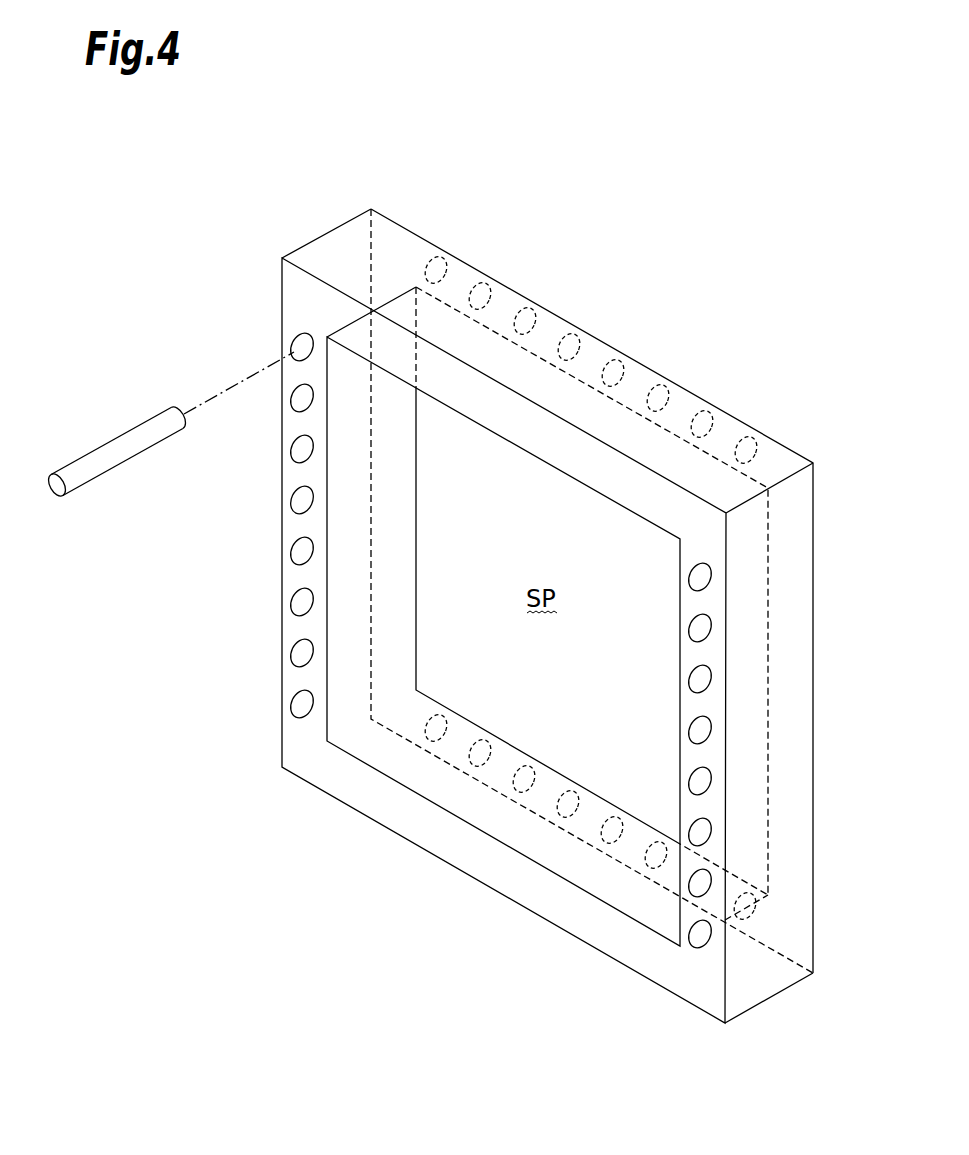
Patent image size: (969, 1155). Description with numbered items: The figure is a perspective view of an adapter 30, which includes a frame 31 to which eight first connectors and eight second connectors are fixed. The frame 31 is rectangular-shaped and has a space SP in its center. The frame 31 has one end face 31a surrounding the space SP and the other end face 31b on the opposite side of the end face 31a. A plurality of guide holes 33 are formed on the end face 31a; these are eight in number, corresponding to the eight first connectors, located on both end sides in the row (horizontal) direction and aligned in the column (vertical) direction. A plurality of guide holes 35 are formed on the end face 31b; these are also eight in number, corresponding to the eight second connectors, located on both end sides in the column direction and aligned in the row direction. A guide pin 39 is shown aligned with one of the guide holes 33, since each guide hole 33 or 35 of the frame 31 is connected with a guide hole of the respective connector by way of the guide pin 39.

The adapter 30 is at (773, 203).
The frame 31 is at (353, 240).
The end face 31a is at (297, 300).
The end face 31b is at (780, 457).
The guide holes 33 is at (296, 345).
The guide holes 35 is at (746, 447).
The guide pin 39 is at (118, 445).